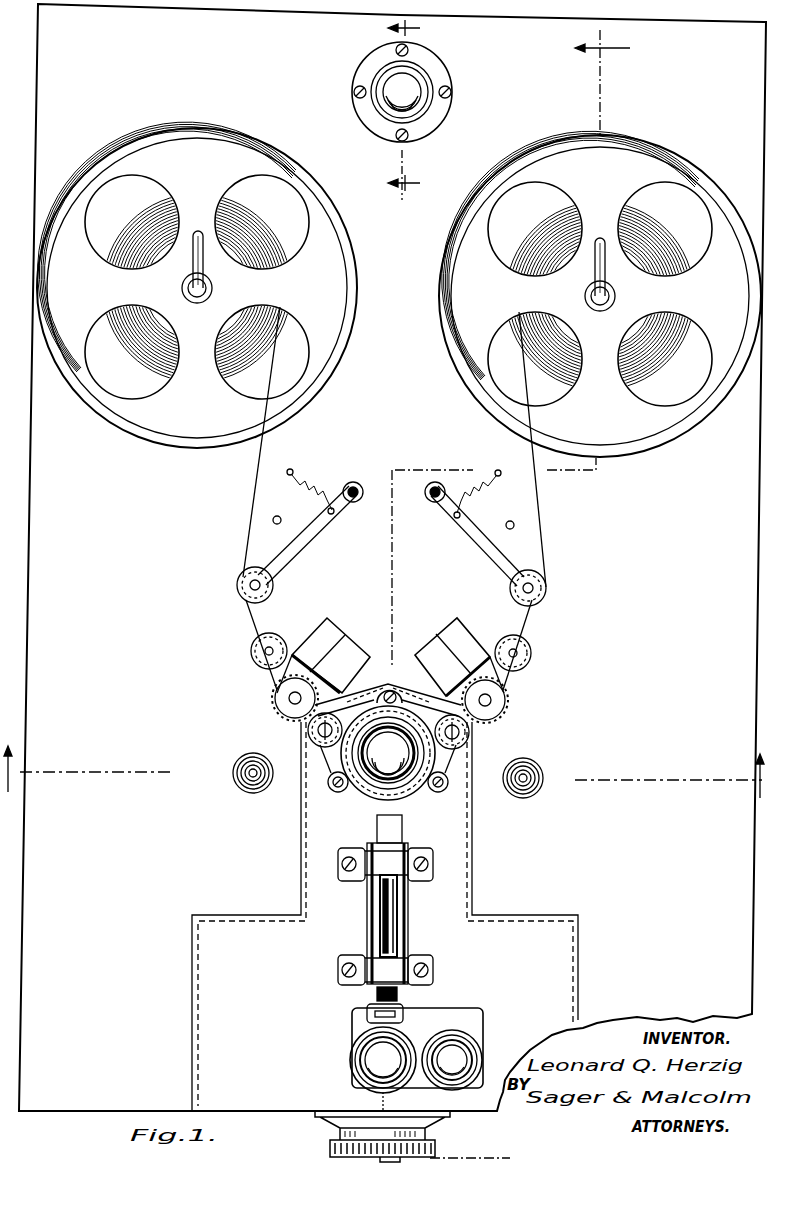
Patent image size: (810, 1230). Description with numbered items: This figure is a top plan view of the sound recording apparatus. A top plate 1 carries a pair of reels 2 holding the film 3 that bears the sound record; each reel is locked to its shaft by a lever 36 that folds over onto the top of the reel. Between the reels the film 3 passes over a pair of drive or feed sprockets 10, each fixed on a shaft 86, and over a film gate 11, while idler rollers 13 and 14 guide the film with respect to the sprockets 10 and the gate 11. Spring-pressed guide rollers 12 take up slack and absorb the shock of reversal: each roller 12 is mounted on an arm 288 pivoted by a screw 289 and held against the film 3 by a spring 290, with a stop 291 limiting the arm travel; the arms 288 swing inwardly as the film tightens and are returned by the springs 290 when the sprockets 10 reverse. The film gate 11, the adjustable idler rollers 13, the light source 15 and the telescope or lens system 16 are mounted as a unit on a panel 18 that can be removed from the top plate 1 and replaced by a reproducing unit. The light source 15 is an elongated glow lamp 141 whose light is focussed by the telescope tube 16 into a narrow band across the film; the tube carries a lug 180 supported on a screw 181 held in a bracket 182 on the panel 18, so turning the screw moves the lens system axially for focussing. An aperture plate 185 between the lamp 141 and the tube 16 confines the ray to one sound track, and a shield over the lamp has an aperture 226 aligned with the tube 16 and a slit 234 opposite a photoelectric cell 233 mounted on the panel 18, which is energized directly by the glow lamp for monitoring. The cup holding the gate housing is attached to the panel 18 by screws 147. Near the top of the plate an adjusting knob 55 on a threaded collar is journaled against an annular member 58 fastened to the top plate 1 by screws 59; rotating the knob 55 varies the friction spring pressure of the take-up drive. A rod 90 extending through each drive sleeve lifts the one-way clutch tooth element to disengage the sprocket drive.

The top plate 1 is at (742, 687).
The reels 2 is at (296, 172).
The film 3 is at (256, 463).
The drive or feed sprockets 10 is at (280, 691).
The film gate 11 is at (366, 786).
The spring-pressed guide rollers 12 is at (238, 582).
The idler rollers 13 is at (308, 731).
The idler rollers 14 is at (252, 642).
The light source 15 is at (356, 1032).
The telescope or lens system 16 is at (352, 906).
The panel 18 is at (200, 951).
The lever 36 is at (200, 270).
The adjusting knob 55 is at (420, 82).
The annular member 58 is at (378, 70).
The screws 59 is at (354, 93).
The shaft 86 is at (292, 700).
The rod 90 is at (253, 780).
The glow lamp 141 is at (366, 1058).
The screws 147 is at (392, 692).
The lug 180 is at (388, 928).
The screw 181 is at (402, 846).
The bracket 182 is at (384, 860).
The aperture plate 185 is at (392, 1008).
The aperture 226 is at (366, 1014).
The photoelectric cell 233 is at (468, 1056).
The slit 234 is at (415, 1060).
The arm 288 is at (312, 536).
The screw 289 is at (355, 481).
The spring 290 is at (312, 490).
The stop 291 is at (272, 520).